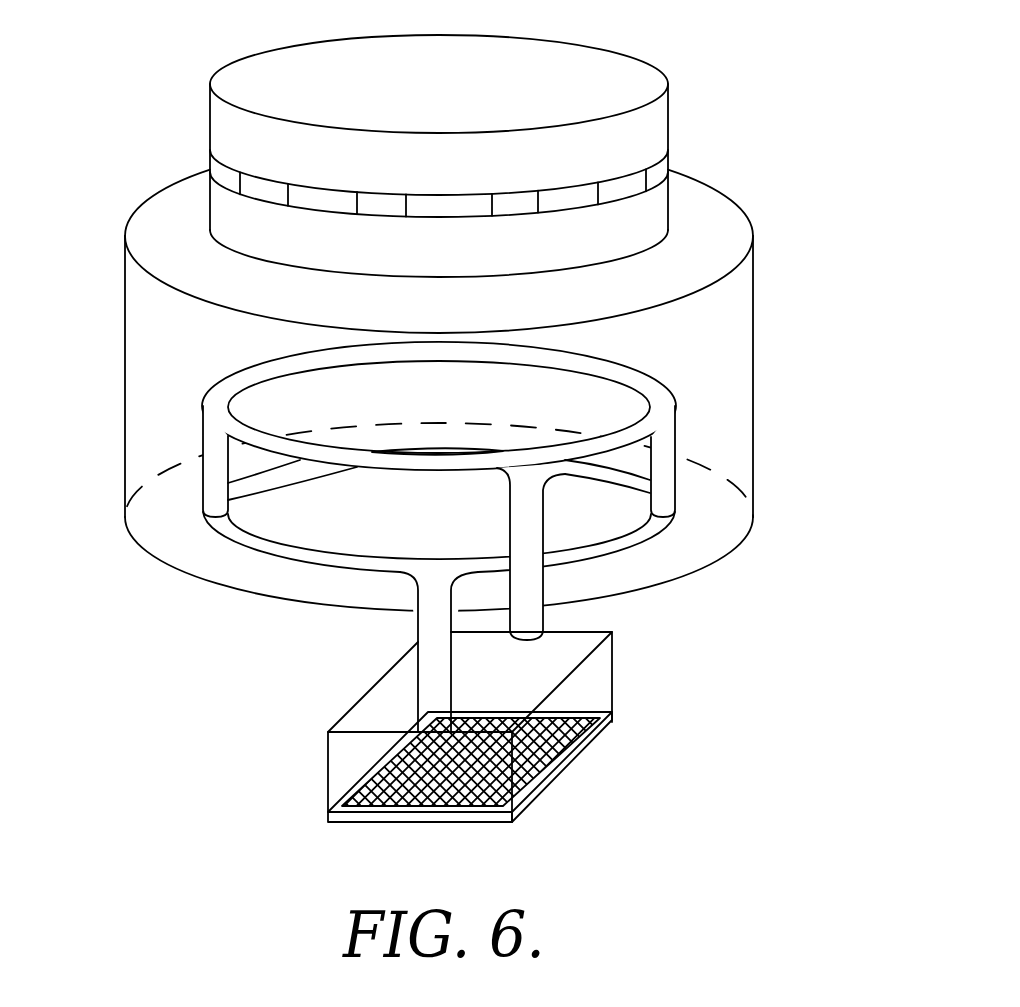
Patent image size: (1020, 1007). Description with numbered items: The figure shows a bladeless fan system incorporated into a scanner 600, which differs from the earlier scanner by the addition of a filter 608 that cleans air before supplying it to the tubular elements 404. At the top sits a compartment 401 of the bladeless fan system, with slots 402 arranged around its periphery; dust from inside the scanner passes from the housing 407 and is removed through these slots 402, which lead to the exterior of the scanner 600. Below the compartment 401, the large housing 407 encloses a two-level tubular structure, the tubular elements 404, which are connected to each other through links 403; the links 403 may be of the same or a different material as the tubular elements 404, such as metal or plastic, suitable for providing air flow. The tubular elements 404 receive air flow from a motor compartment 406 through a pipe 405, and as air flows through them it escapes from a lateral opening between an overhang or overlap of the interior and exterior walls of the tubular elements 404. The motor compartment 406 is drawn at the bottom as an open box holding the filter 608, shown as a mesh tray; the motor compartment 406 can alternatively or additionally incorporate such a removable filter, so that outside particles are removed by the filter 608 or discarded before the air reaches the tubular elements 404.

The scanner 600 is at (510, 503).
The compartment 401 is at (287, 57).
The slots 402 is at (660, 168).
The links 403 is at (213, 483).
The tubular elements 404 is at (610, 443).
The pipe 405 is at (433, 578).
The motor compartment 406 is at (328, 770).
The housing 407 is at (125, 332).
The filter 608 is at (560, 770).